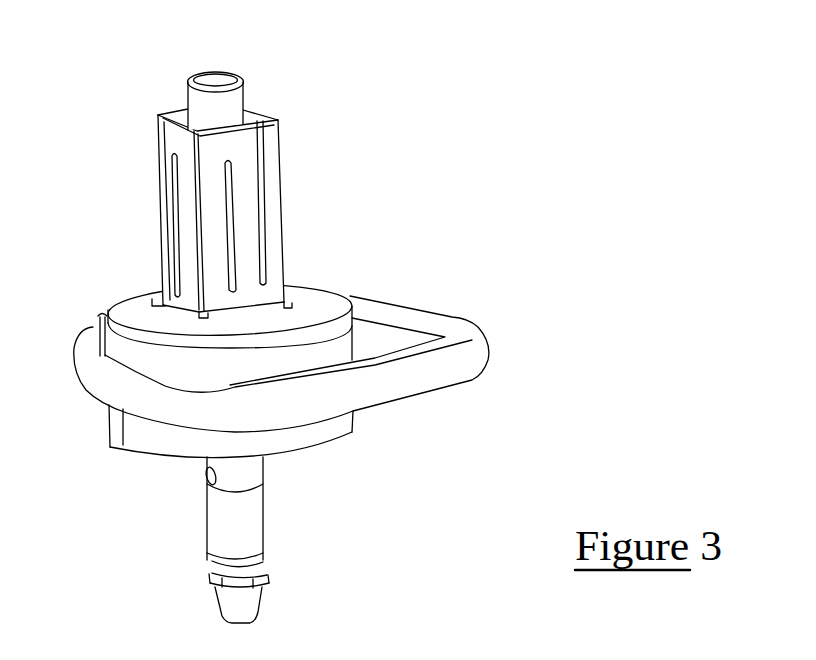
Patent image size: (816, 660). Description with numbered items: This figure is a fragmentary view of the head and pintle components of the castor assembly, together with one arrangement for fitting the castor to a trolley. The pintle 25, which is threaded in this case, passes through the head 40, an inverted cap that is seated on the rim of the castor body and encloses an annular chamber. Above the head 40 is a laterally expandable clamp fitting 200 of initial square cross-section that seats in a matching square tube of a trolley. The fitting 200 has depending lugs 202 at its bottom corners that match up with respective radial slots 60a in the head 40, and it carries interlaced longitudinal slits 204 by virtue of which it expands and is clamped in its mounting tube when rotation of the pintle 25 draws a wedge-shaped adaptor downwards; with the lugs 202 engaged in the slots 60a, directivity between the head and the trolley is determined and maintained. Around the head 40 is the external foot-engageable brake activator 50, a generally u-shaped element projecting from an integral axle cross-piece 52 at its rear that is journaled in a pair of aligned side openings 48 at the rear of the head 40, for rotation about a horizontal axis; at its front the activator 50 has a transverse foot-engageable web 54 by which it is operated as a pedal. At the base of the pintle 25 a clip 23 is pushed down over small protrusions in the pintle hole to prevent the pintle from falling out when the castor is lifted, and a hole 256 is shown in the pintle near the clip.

The clamp fitting 200 is at (281, 182).
The longitudinal slits 204 is at (237, 264).
The depending lugs 202 is at (308, 303).
The foot-engageable web 54 is at (386, 357).
The brake activator 50 is at (455, 316).
The side openings 48 is at (106, 315).
The radial slots 60a is at (157, 300).
The axle cross-piece 52 is at (93, 327).
The head 40 is at (358, 428).
The pintle 25 is at (258, 513).
The hole 256 is at (209, 482).
The clip 23 is at (270, 578).